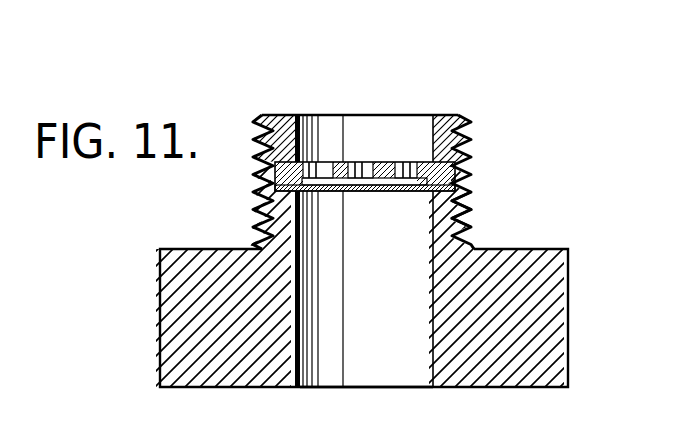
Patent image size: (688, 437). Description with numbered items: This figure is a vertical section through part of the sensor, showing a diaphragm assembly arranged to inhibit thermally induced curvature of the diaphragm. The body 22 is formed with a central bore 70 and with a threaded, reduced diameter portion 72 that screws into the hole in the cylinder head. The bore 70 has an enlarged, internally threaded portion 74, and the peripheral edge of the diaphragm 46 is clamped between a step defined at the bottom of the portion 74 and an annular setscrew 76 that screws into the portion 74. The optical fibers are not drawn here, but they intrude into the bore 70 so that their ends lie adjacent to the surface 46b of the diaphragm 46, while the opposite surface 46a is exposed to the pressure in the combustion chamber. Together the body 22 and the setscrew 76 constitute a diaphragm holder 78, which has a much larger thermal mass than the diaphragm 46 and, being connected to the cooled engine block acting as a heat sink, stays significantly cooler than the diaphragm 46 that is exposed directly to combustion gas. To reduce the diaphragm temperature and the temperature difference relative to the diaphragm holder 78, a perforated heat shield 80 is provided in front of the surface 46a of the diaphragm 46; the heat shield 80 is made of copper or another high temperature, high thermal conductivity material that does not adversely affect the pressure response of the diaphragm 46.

The body 22 is at (535, 250).
The diaphragm 46 is at (313, 198).
The surface of the diaphragm 46a is at (341, 165).
The surface of the diaphragm 46b is at (472, 212).
The central bore 70 is at (398, 318).
The threaded, reduced diameter portion 72 is at (472, 145).
The enlarged, internally threaded portion 74 is at (287, 114).
The annular setscrew 76 is at (435, 115).
The diaphragm holder 78 is at (357, 71).
The perforated heat shield 80 is at (472, 181).